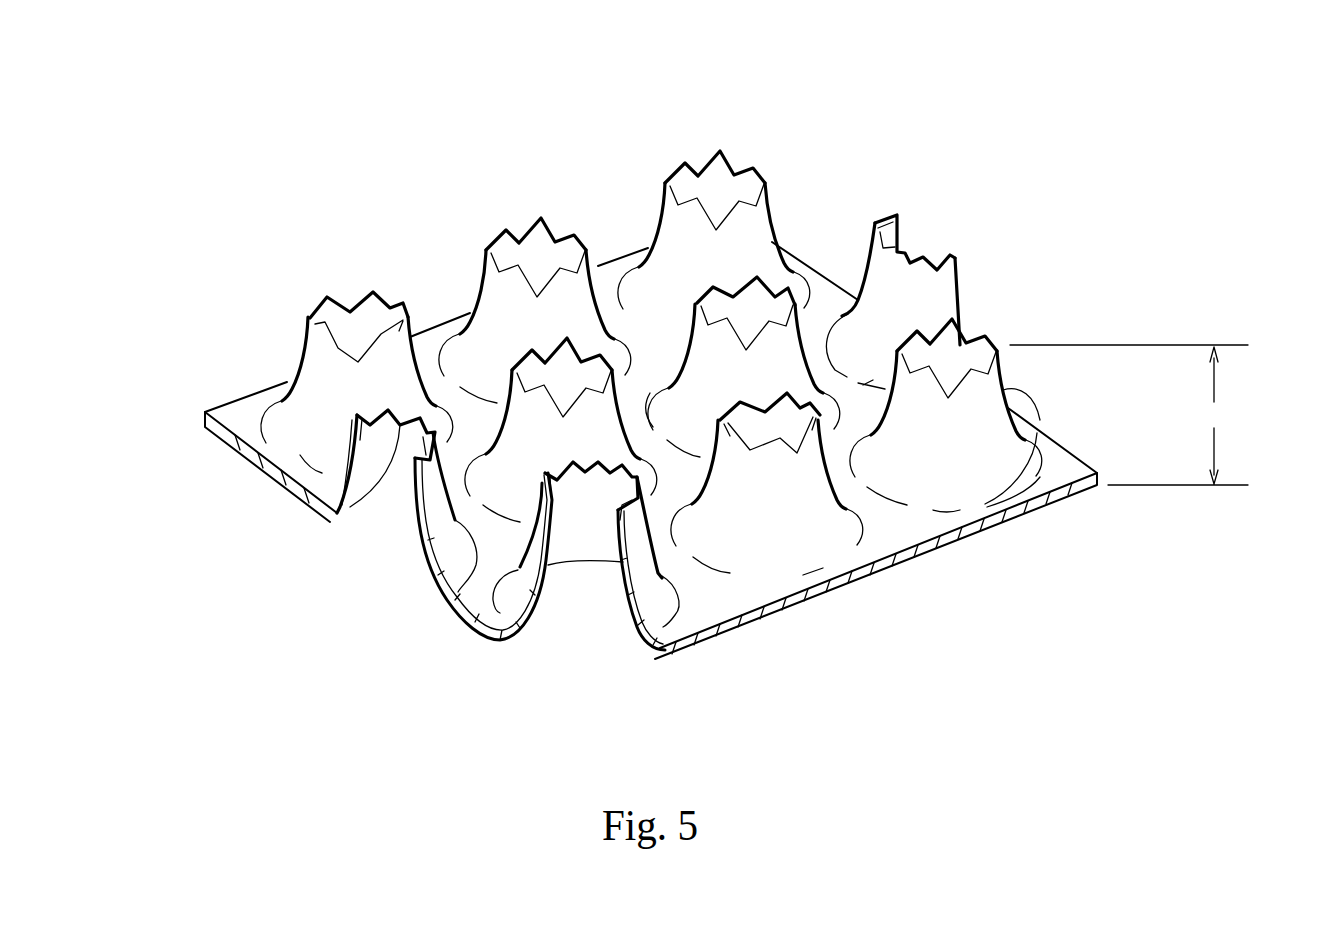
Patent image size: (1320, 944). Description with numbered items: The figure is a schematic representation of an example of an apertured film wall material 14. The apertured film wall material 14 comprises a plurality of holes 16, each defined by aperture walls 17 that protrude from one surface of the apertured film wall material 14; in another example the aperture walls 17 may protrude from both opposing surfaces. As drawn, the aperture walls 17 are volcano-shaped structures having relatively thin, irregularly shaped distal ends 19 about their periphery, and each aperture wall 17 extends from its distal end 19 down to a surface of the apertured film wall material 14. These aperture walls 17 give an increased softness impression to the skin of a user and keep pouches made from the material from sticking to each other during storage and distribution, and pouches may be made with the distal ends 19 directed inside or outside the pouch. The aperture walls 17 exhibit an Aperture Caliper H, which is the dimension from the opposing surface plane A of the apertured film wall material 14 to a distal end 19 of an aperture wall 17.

The apertured film wall material 14 is at (1009, 218).
The holes 16 is at (762, 306).
The aperture walls 17 is at (687, 228).
The distal ends 19 is at (703, 177).
The Aperture Caliper H is at (1129, 415).
The opposing surface plane A is at (1150, 497).